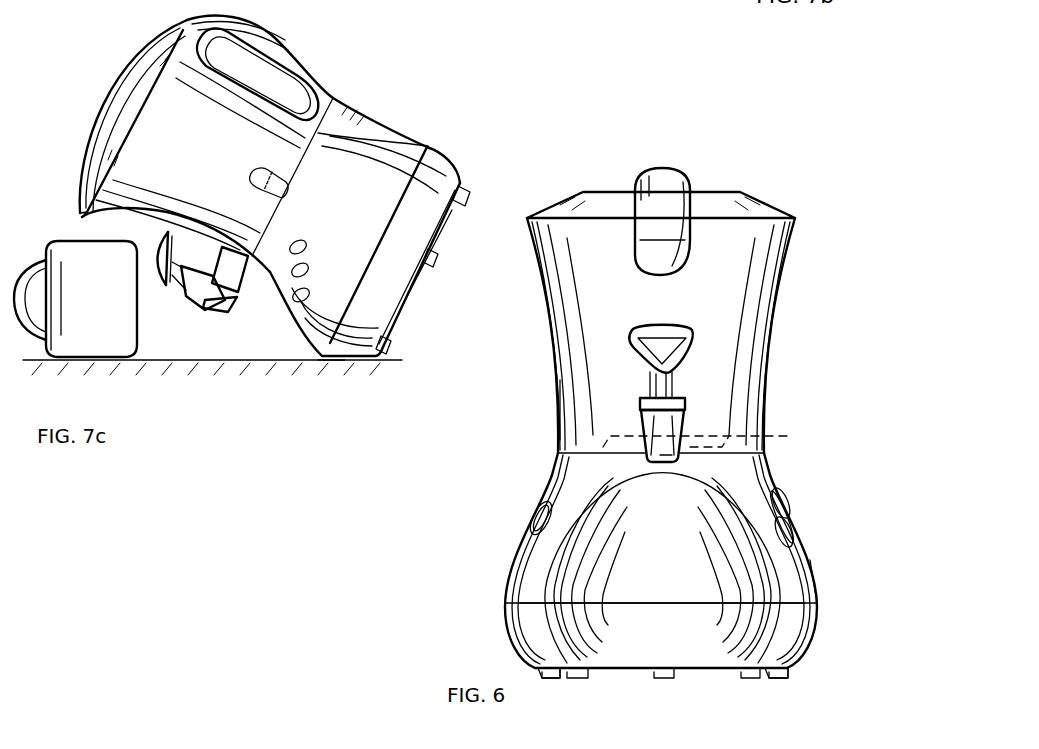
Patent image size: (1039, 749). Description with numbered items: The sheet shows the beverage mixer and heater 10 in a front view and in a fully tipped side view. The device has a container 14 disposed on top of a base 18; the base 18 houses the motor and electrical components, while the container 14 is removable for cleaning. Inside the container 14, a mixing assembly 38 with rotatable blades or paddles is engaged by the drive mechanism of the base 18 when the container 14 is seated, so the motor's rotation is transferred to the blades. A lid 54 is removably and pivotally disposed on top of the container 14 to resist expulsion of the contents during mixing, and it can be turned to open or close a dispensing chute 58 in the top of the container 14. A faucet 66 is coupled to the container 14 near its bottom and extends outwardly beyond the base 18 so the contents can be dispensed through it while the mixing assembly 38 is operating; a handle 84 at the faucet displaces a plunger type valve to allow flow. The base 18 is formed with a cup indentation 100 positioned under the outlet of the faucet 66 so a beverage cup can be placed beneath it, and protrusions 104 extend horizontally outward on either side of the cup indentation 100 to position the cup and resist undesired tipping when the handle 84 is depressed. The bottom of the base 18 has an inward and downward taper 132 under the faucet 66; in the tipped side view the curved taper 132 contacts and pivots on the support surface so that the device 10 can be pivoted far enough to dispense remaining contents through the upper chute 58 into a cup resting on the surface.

In FIG. 7c, the beverage mixer and heater 10 is at (300, 0).
In FIG. 6, the beverage mixer and heater 10 is at (478, 547).
In FIG. 6, the container 14 is at (560, 397).
In FIG. 7c, the base 18 is at (452, 158).
In FIG. 6, the base 18 is at (550, 478).
In FIG. 6, the mixing assembly 38 is at (716, 438).
In FIG. 6, the lid 54 is at (657, 168).
In FIG. 7c, the dispensing chute 58 is at (78, 207).
In FIG. 6, the dispensing chute 58 is at (655, 237).
In FIG. 6, the faucet 66 is at (700, 424).
In FIG. 6, the handle 84 is at (660, 323).
In FIG. 6, the cup indentation 100 is at (690, 586).
In FIG. 6, the protrusions 104 is at (541, 635).
In FIG. 7c, the taper 132 is at (325, 362).